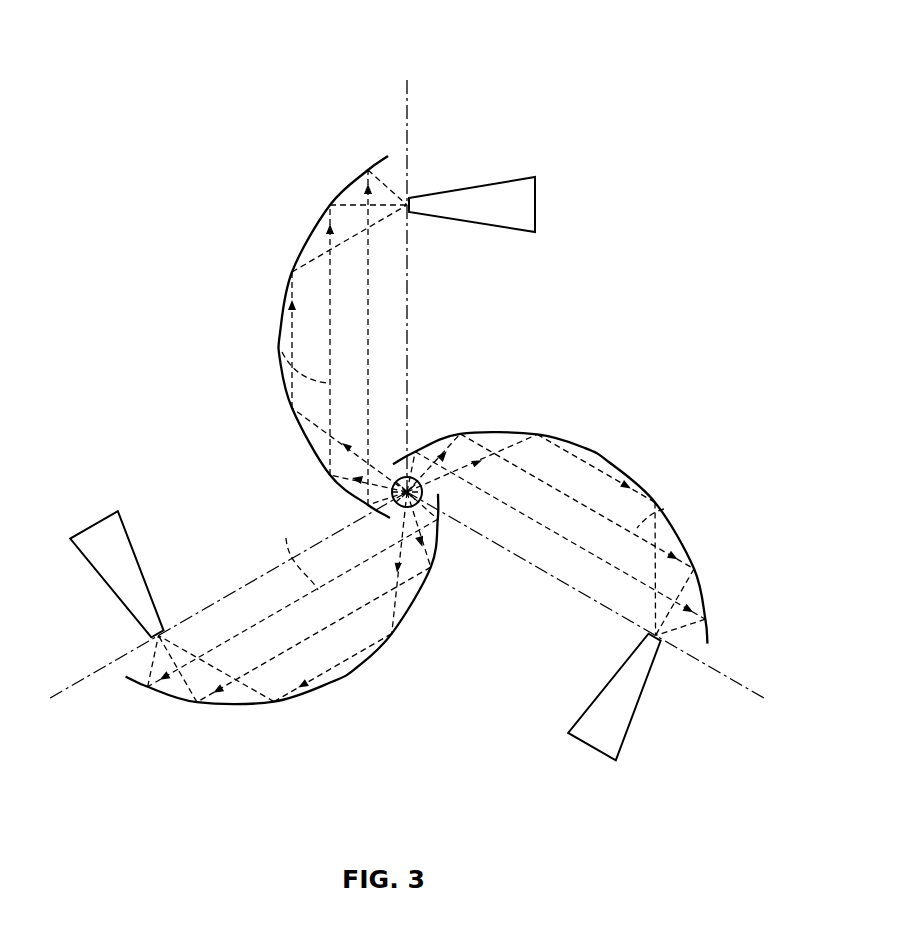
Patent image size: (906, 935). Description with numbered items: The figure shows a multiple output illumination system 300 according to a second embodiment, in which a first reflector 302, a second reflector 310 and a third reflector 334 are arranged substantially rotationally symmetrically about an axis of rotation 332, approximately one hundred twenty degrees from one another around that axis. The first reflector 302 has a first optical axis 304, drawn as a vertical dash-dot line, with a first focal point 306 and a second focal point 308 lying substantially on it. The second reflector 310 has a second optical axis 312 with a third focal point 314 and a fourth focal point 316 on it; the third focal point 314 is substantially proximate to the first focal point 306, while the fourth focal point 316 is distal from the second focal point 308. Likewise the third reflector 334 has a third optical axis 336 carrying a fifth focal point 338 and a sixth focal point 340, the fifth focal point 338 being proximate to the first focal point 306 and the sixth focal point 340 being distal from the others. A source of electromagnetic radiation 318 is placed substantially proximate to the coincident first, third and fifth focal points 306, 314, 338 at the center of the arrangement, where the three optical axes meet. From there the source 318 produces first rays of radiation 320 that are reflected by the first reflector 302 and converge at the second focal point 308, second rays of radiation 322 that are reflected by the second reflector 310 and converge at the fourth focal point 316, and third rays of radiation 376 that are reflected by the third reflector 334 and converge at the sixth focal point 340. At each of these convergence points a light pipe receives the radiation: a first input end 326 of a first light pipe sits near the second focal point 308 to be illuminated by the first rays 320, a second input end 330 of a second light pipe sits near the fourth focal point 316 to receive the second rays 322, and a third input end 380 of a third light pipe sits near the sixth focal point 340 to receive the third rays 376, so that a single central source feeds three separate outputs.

The multiple output illumination system 300 is at (188, 50).
The first reflector 302 is at (286, 285).
The first optical axis 304 is at (405, 130).
The first focal point 306 is at (557, 453).
The second focal point 308 is at (489, 190).
The second reflector 310 is at (630, 472).
The second optical axis 312 is at (728, 672).
The third focal point 314 is at (407, 492).
The fourth focal point 316 is at (660, 692).
The source of electromagnetic radiation 318 is at (425, 510).
The first rays of radiation 320 is at (279, 352).
The second rays of radiation 322 is at (665, 509).
The first input end 326 is at (413, 203).
The second input end 330 is at (661, 648).
The axis of rotation 332 is at (407, 492).
The third reflector 334 is at (336, 681).
The third optical axis 336 is at (88, 676).
The fifth focal point 338 is at (408, 490).
The sixth focal point 340 is at (159, 579).
The third rays of radiation 376 is at (292, 550).
The third input end 380 is at (156, 628).